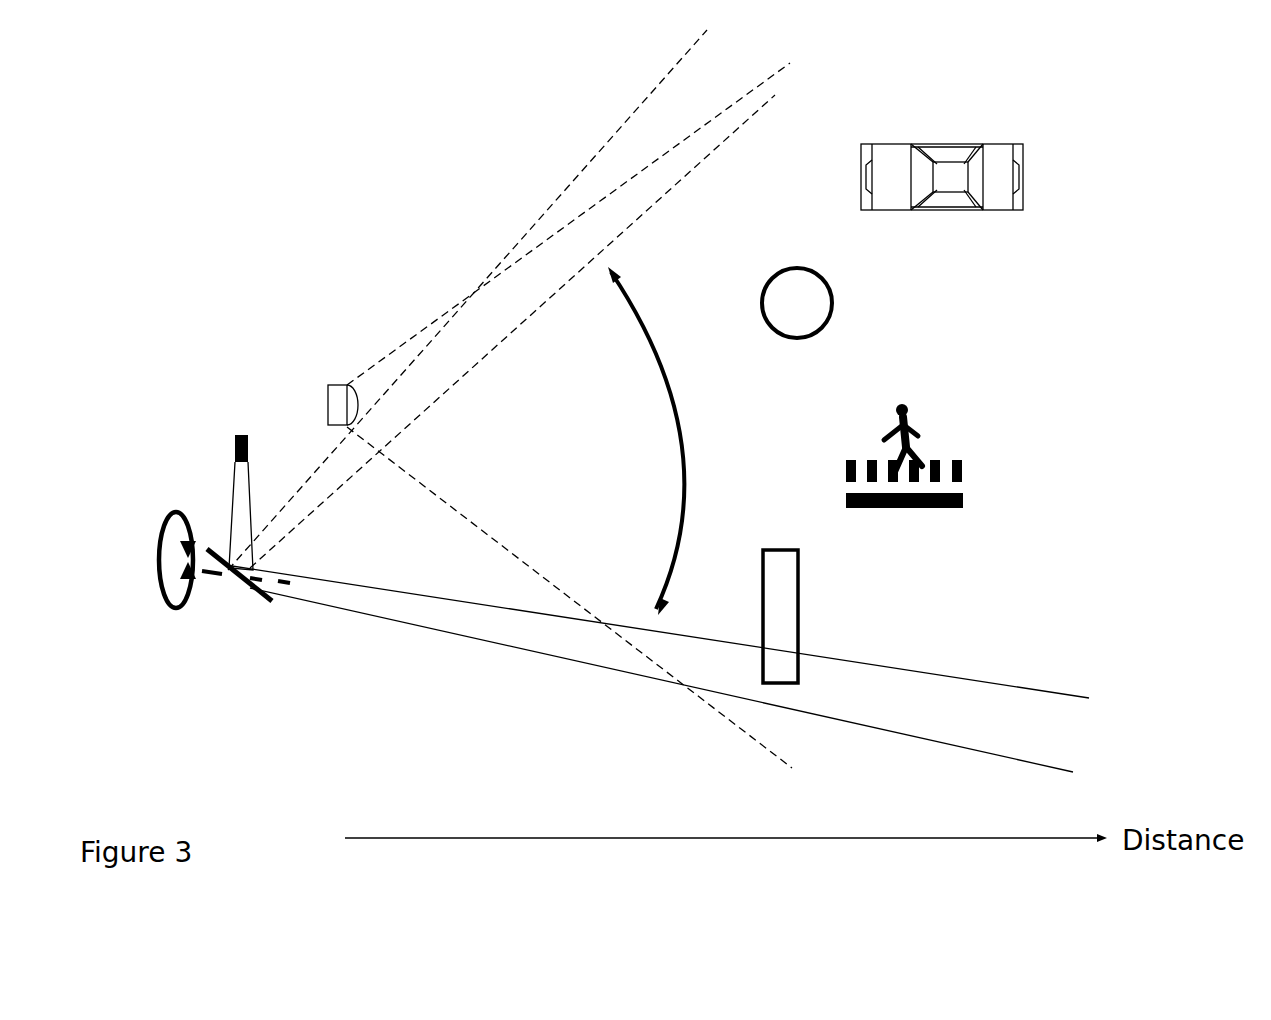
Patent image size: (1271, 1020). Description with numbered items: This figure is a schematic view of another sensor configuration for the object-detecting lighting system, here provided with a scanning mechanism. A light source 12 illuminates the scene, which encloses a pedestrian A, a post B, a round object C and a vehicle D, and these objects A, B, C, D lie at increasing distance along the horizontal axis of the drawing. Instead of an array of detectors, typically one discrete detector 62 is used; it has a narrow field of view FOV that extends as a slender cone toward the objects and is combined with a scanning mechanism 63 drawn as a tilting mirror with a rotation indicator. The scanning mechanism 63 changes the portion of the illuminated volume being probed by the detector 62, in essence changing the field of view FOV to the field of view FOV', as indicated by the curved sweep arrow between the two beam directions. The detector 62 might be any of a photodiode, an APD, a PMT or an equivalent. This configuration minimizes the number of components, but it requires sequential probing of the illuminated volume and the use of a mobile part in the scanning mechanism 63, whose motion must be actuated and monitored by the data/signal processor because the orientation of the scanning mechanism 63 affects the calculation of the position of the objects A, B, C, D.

The light emitter 12 is at (327, 400).
The detector 62 is at (235, 450).
The scanning mechanism 63 is at (240, 580).
The field of view FOV is at (660, 669).
The changed field of view FOV' is at (573, 99).
The object A is at (922, 438).
The object B is at (798, 580).
The object C is at (832, 305).
The object D is at (1023, 179).